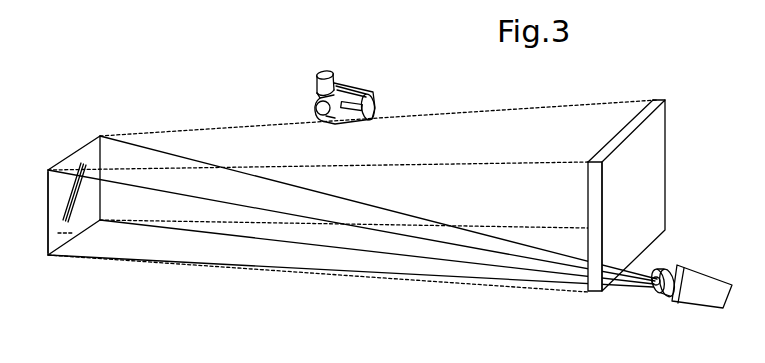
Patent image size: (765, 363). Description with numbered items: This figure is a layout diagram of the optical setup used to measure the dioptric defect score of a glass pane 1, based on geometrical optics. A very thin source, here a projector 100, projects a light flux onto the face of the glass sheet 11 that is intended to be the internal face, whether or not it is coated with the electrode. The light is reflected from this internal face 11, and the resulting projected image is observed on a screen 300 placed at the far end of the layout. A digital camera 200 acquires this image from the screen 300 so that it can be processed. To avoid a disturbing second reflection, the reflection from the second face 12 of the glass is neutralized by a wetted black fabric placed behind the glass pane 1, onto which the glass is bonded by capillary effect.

The glass pane 1 is at (78, 141).
The internal face of the glass sheet 11 is at (78, 236).
The second face 12 is at (46, 187).
The projector 100 is at (694, 275).
The digital camera 200 is at (341, 81).
The screen 300 is at (657, 122).